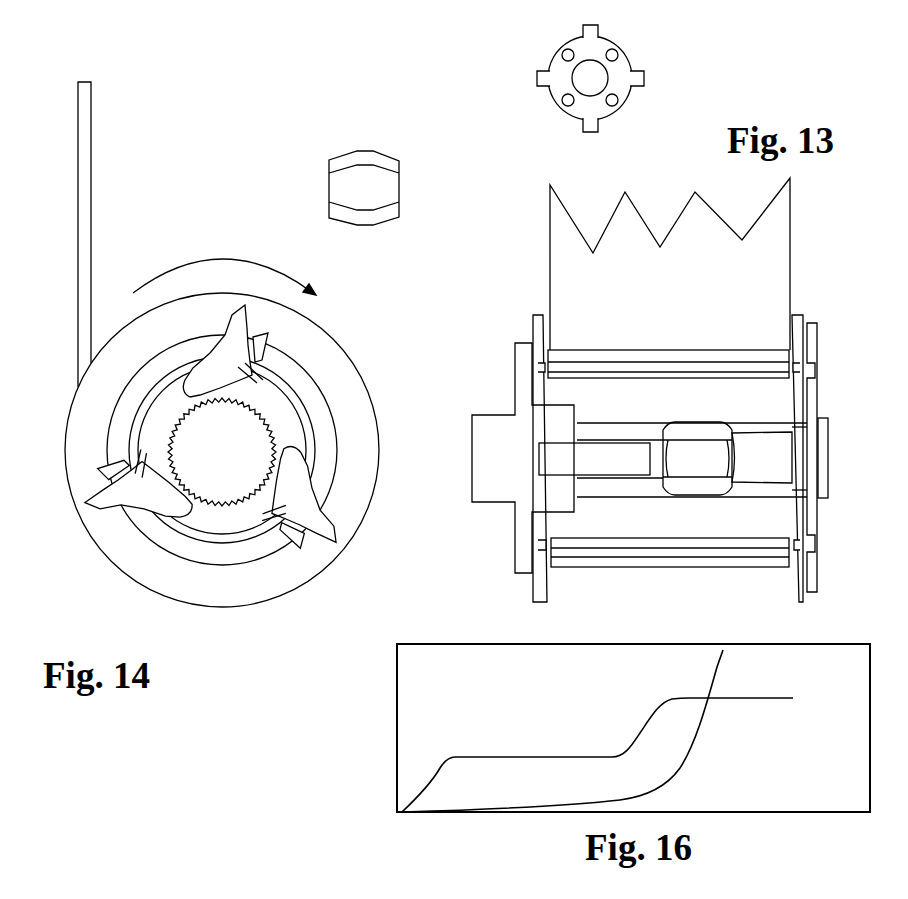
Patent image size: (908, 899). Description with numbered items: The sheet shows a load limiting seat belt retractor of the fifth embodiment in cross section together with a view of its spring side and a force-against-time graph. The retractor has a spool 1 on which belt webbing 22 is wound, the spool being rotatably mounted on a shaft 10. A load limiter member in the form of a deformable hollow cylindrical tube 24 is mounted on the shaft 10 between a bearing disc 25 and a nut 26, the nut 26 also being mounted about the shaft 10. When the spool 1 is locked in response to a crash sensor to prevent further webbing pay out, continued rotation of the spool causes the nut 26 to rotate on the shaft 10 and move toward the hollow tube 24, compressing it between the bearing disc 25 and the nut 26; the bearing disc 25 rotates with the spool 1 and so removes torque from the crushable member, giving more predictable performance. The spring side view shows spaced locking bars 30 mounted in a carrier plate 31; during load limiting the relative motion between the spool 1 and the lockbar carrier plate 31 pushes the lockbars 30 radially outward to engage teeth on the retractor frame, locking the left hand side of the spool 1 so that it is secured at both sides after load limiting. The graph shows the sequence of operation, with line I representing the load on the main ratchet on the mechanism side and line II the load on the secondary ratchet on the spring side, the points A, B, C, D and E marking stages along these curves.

In FIG. 13, the spool 1 is at (797, 577).
In FIG. 14, the spool 1 is at (112, 545).
In FIG. 13, the shaft 10 is at (607, 462).
In FIG. 13, the belt webbing 22 is at (770, 248).
In FIG. 14, the belt webbing 22 is at (135, 152).
In FIG. 13, the deformable hollow cylindrical tube 24 is at (759, 448).
In FIG. 13, the bearing disc 25 is at (807, 437).
In FIG. 13, the nut 26 is at (693, 485).
In FIG. 14, the locking bars 30 is at (325, 553).
In FIG. 14, the carrier plate 31 is at (178, 552).
In FIG. 16, the point A on curve A is at (408, 800).
In FIG. 16, the point B on curve B is at (442, 787).
In FIG. 16, the point C on curve C is at (512, 750).
In FIG. 16, the point D on curve D is at (622, 747).
In FIG. 16, the point E on curve E is at (718, 708).
In FIG. 16, the line I is at (609, 750).
In FIG. 16, the line II is at (573, 731).